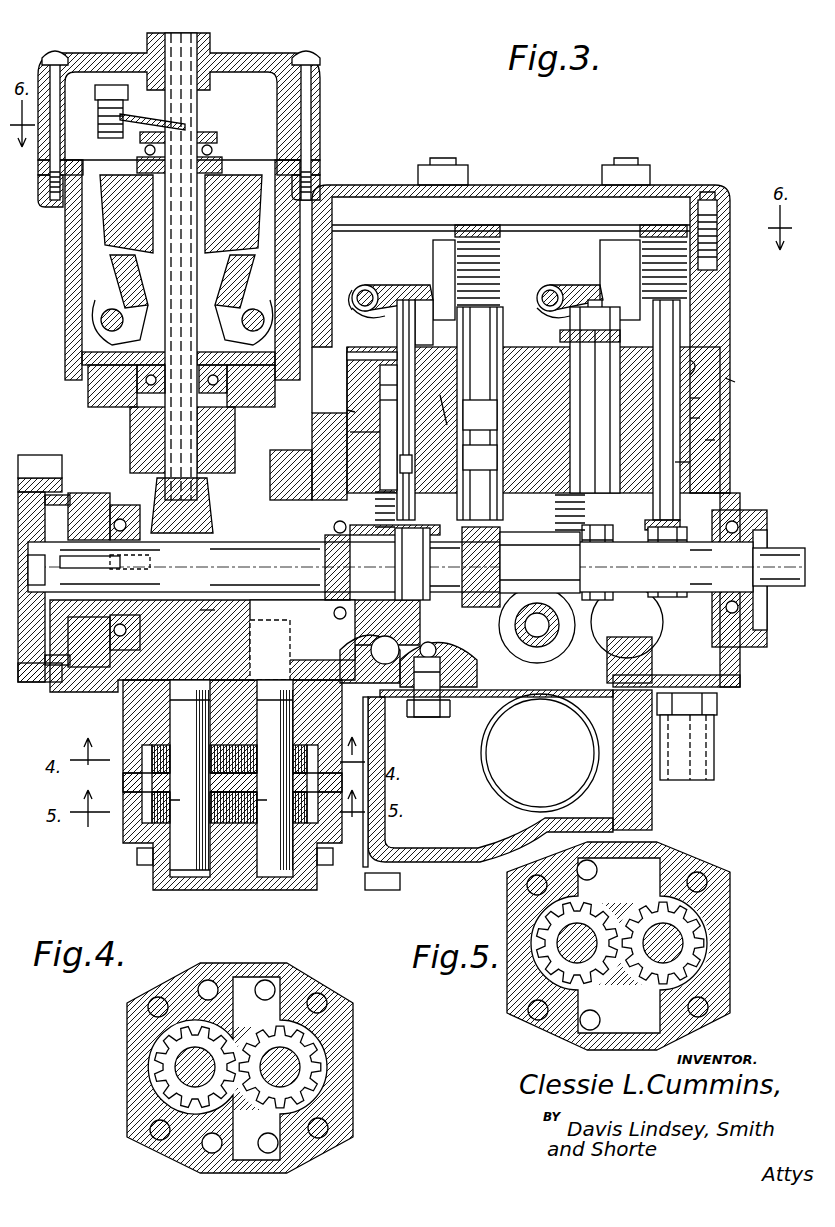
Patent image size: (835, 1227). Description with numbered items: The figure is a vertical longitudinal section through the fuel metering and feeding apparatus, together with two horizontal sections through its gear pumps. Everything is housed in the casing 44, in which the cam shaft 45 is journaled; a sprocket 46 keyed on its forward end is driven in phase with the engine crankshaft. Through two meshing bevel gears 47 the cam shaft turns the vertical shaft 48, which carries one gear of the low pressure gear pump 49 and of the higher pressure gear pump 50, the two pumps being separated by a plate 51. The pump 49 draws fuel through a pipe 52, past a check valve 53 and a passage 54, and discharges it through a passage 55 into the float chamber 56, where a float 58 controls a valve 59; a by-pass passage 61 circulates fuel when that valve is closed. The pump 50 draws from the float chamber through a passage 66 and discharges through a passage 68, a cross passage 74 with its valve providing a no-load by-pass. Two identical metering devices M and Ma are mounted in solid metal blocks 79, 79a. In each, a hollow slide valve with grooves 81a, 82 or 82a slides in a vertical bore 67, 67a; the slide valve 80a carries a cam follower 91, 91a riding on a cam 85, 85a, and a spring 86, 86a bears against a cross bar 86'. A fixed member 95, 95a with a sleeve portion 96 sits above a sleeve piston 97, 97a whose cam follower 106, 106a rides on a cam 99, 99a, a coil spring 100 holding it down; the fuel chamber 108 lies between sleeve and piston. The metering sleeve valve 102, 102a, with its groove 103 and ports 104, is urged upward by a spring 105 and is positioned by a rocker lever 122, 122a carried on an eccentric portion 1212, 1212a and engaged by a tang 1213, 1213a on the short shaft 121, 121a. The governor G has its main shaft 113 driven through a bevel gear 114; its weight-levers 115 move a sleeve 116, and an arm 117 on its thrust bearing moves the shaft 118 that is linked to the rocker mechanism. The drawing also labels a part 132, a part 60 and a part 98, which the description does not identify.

In FIG. 3, the governor G is at (262, 50).
In FIG. 3, the arm 117 is at (160, 95).
In FIG. 3, the main governor shaft 113 is at (190, 110).
In FIG. 3, the sleeve 116 is at (215, 158).
In FIG. 3, the governor weight-levers 115 is at (235, 200).
In FIG. 3, the shaft 118 is at (115, 140).
In FIG. 3, the beveled gear 114 is at (215, 490).
In FIG. 3, the casing 44 is at (738, 304).
In FIG. 3, the eccentric portion 1212 is at (366, 290).
In FIG. 3, the projection or tang 1213 is at (352, 290).
In FIG. 3, the rocker lever 122 is at (378, 286).
In FIG. 3, the spring guide 132 is at (438, 262).
In FIG. 3, the coiled spring 105 is at (428, 300).
In FIG. 3, the cross bar 86' is at (571, 219).
In FIG. 3, the spring 86 is at (572, 271).
In FIG. 3, the eccentric portion 1212a is at (550, 290).
In FIG. 3, the rocker lever 122a is at (565, 286).
In FIG. 3, the short shaft 121a is at (545, 292).
In FIG. 3, the metering sleeve valve 102a is at (596, 300).
In FIG. 3, the spring 86a is at (717, 285).
In FIG. 3, the annular groove 81a is at (690, 370).
In FIG. 3, the metering and delivery device Ma is at (742, 383).
In FIG. 3, the vertical bore 67a is at (690, 400).
In FIG. 3, the hollow slide valve 80a is at (690, 420).
In FIG. 3, the solid metal block 79a is at (705, 440).
In FIG. 3, the annular groove 82a is at (680, 465).
In FIG. 3, the short shaft 121 is at (360, 312).
In FIG. 3, the member 95 is at (350, 355).
In FIG. 3, the metering sleeve valve 102 is at (380, 372).
In FIG. 3, the collar or sleeve portion 96 is at (380, 385).
In FIG. 3, the fuel chamber 108 is at (380, 400).
In FIG. 3, the metering and delivery device M is at (339, 415).
In FIG. 3, the cam 99 is at (400, 415).
In FIG. 3, the solid metal block 79 is at (501, 420).
In FIG. 3, the annular groove 103 is at (352, 432).
In FIG. 3, the by-pass passage 61 is at (370, 608).
In FIG. 3, the vertical bore 67 is at (465, 420).
In FIG. 3, the plunger 60 is at (497, 422).
In FIG. 3, the annular groove 82 is at (497, 458).
In FIG. 3, the member 95a is at (545, 333).
In FIG. 3, the projection or tang 1213a is at (570, 338).
In FIG. 3, the ports 104 is at (412, 464).
In FIG. 3, the piston 97 is at (397, 507).
In FIG. 3, the piston 97a is at (555, 512).
In FIG. 3, the cam follower 91 is at (470, 530).
In FIG. 3, the cam follower 91a is at (665, 530).
In FIG. 3, the coil spring 100 is at (358, 570).
In FIG. 3, the cam follower 106 is at (412, 564).
In FIG. 3, the cam follower 106a is at (540, 562).
In FIG. 3, the sprocket 46 is at (36, 458).
In FIG. 3, the cam shaft 45 is at (265, 560).
In FIG. 3, the bevel gears 47 is at (165, 600).
In FIG. 3, the passage 66 is at (205, 612).
In FIG. 4, the passage 66 is at (212, 1145).
In FIG. 5, the passage 66 is at (600, 1020).
In FIG. 3, the passage 54 is at (275, 660).
In FIG. 4, the passage 54 is at (268, 1145).
In FIG. 3, the cam 85 is at (480, 608).
In FIG. 3, the cam 85a is at (668, 600).
In FIG. 3, the passage 55 is at (450, 648).
In FIG. 4, the passage 55 is at (266, 988).
In FIG. 3, the cross passage 74 is at (540, 632).
In FIG. 3, the cam 99a is at (598, 595).
In FIG. 3, the valve 59 is at (450, 708).
In FIG. 3, the float 58 is at (540, 753).
In FIG. 3, the check valve 53 is at (717, 725).
In FIG. 3, the pipe 52 is at (715, 765).
In FIG. 3, the pump shaft 98 is at (175, 710).
In FIG. 3, the low pressure gear pump 49 is at (140, 750).
In FIG. 4, the low pressure gear pump 49 is at (318, 1050).
In FIG. 3, the plate 51 is at (123, 780).
In FIG. 5, the plate 51 is at (650, 870).
In FIG. 3, the higher pressure gear pump 50 is at (148, 810).
In FIG. 5, the higher pressure gear pump 50 is at (560, 948).
In FIG. 3, the float chamber 56 is at (488, 790).
In FIG. 4, the passage 68 is at (208, 988).
In FIG. 5, the passage 68 is at (597, 872).
In FIG. 4, the vertical shaft 48 is at (175, 1067).
In FIG. 5, the vertical shaft 48 is at (588, 952).